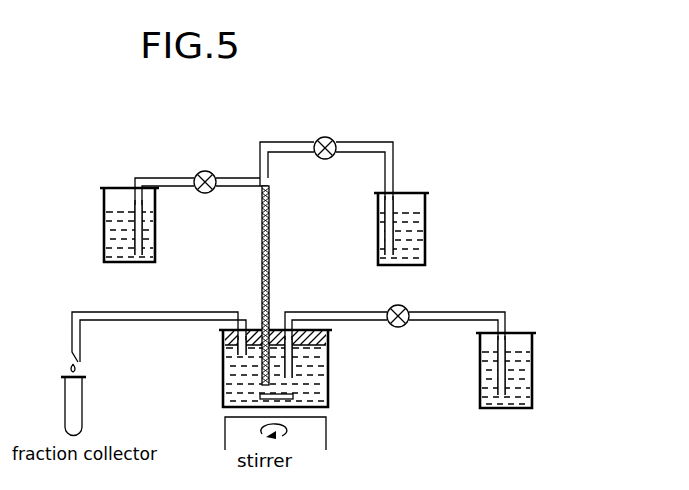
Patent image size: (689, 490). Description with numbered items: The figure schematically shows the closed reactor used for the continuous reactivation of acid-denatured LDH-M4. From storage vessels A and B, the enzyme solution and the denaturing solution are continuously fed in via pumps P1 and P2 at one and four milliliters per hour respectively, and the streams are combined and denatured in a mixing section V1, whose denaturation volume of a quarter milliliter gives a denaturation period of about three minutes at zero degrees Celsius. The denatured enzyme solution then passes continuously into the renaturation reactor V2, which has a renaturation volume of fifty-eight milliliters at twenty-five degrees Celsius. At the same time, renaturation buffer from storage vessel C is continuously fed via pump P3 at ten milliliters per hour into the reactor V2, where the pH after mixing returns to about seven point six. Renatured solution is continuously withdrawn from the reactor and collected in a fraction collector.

The storage vessel A is at (156, 253).
The storage vessel B is at (426, 255).
The storage vessel C is at (533, 384).
The pump P1 is at (214, 173).
The pump P2 is at (333, 140).
The pump P3 is at (405, 308).
The mixing section V1 is at (276, 257).
The renaturation reactor V2 is at (336, 377).